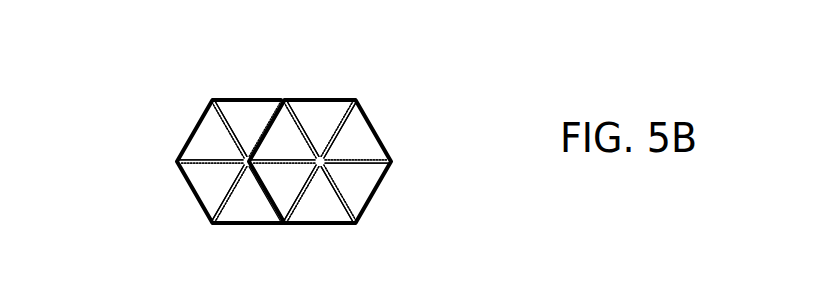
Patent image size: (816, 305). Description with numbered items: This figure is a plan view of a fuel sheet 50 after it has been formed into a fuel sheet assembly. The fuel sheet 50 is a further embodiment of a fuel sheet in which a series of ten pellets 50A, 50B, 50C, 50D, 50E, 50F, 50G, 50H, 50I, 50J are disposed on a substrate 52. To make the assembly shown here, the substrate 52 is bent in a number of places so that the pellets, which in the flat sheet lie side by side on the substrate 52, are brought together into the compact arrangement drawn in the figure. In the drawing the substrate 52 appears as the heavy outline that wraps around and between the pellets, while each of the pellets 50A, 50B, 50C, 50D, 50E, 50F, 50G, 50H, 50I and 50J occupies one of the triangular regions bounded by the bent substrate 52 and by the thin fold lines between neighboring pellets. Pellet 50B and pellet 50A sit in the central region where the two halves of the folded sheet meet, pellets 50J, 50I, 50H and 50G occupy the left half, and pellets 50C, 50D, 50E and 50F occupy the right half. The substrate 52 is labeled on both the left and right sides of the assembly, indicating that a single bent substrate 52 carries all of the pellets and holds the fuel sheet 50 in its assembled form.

The fuel sheet 50 is at (129, 55).
The substrate 52 is at (172, 143).
The pellet 50A is at (290, 183).
The pellet 50B is at (292, 132).
The pellet 50C is at (323, 112).
The pellet 50D is at (362, 133).
The pellet 50E is at (358, 185).
The pellet 50F is at (333, 210).
The pellet 50G is at (250, 210).
The pellet 50H is at (205, 188).
The pellet 50I is at (207, 137).
The pellet 50J is at (258, 113).